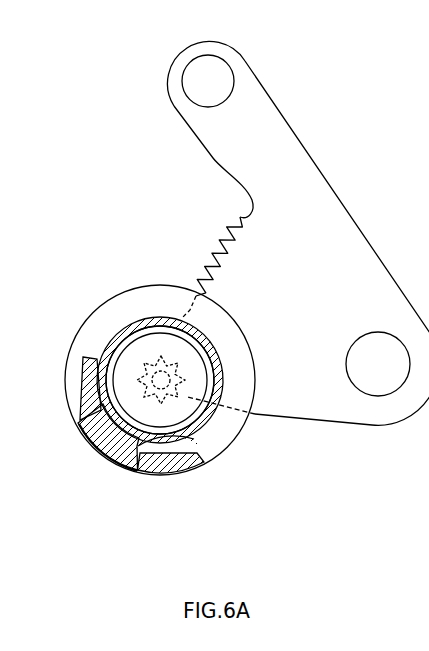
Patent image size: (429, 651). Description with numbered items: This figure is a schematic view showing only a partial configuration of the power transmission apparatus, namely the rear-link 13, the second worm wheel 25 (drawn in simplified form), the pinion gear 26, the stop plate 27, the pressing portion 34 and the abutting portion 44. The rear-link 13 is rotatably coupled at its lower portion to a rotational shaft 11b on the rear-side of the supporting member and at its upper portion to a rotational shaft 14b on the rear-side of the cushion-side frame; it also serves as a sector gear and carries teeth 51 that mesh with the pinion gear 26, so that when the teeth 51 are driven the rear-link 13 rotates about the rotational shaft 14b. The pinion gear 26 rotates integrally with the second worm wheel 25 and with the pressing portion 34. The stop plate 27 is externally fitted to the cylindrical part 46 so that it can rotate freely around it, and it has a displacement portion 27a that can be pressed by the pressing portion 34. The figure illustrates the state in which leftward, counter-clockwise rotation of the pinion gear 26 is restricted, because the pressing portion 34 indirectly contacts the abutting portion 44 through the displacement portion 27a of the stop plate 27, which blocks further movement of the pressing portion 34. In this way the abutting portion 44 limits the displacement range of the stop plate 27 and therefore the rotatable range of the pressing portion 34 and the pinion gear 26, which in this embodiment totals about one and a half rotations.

The rotational shaft 11b is at (212, 78).
The rear-link 13 is at (333, 193).
The rotational shaft 14b is at (380, 380).
The second worm wheel 25 is at (125, 307).
The pinion gear 26 is at (161, 355).
The stop plate 27 is at (203, 423).
The displacement portion 27a is at (102, 462).
The pressing portion 34 is at (80, 360).
The abutting portion 44 is at (162, 475).
The cylindrical part 46 is at (177, 428).
The teeth 51 is at (238, 215).